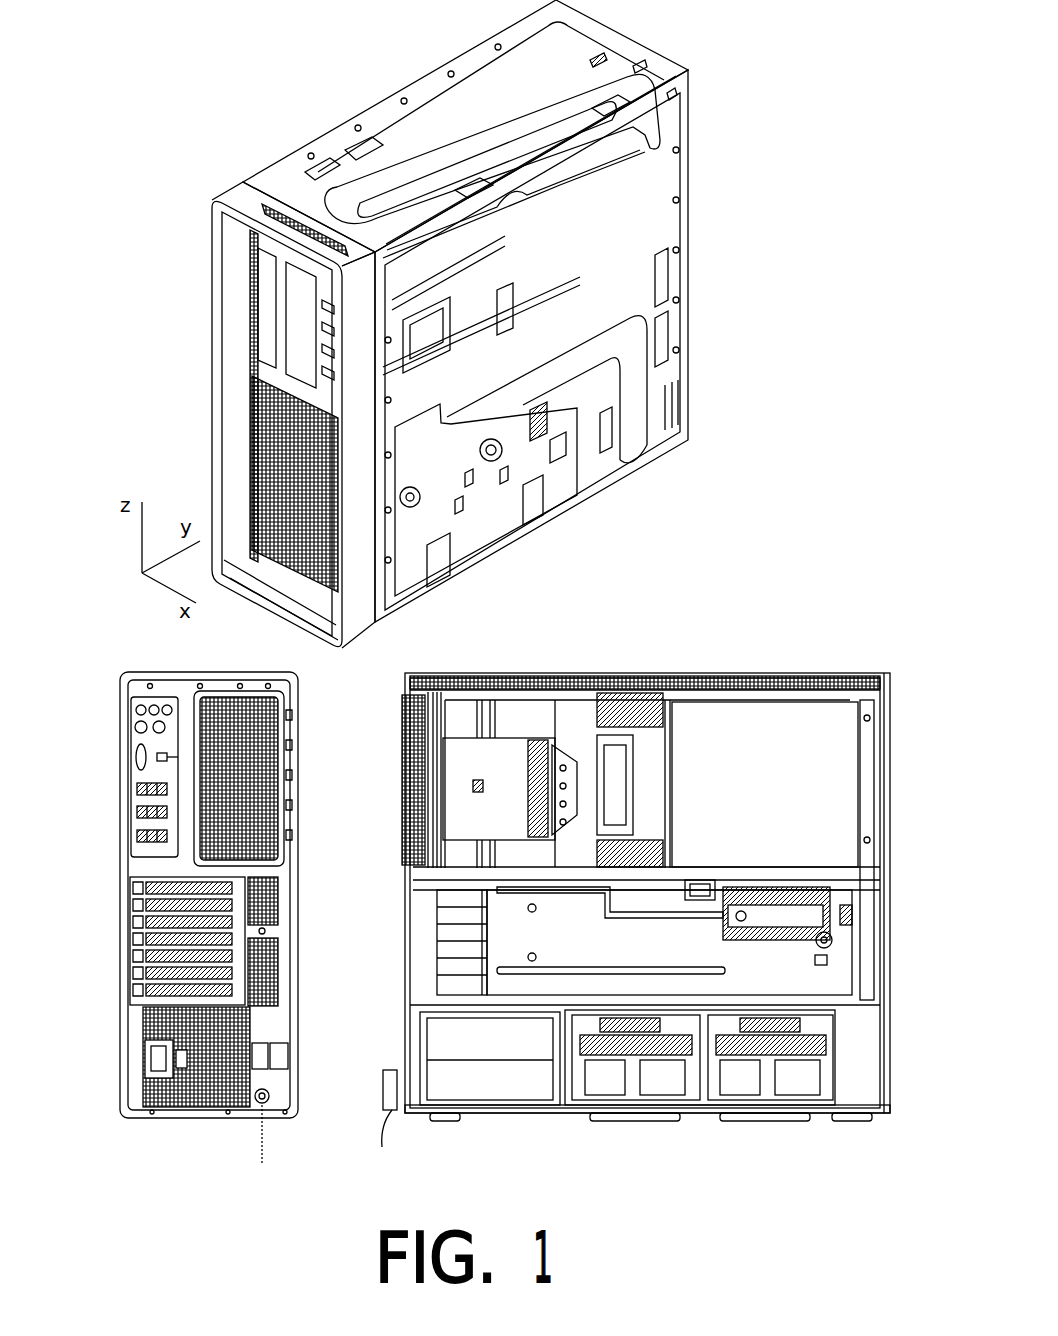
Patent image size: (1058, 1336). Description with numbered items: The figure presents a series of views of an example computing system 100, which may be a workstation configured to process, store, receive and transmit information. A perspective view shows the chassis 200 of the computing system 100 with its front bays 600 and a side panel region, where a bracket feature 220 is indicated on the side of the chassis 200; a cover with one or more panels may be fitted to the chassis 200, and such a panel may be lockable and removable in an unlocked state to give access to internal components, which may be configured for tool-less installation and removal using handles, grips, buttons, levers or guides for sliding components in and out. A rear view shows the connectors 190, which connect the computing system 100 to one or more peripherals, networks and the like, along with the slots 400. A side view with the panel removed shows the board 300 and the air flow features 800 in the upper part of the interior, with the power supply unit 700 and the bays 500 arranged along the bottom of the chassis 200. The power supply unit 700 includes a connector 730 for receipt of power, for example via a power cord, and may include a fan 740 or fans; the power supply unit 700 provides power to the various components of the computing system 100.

The computing system 100 is at (310, 78).
The bays 600 is at (238, 345).
The chassis 200 is at (600, 508).
The side panel bracket 220 is at (482, 278).
The slots 400 is at (127, 962).
The connectors 190 is at (128, 688).
The connector 730 is at (158, 1068).
The fan 740 is at (200, 1070).
The board 300 is at (670, 690).
The air flow features 800 is at (532, 707).
The power supply unit 700 is at (493, 1083).
The bays 500 is at (743, 1107).